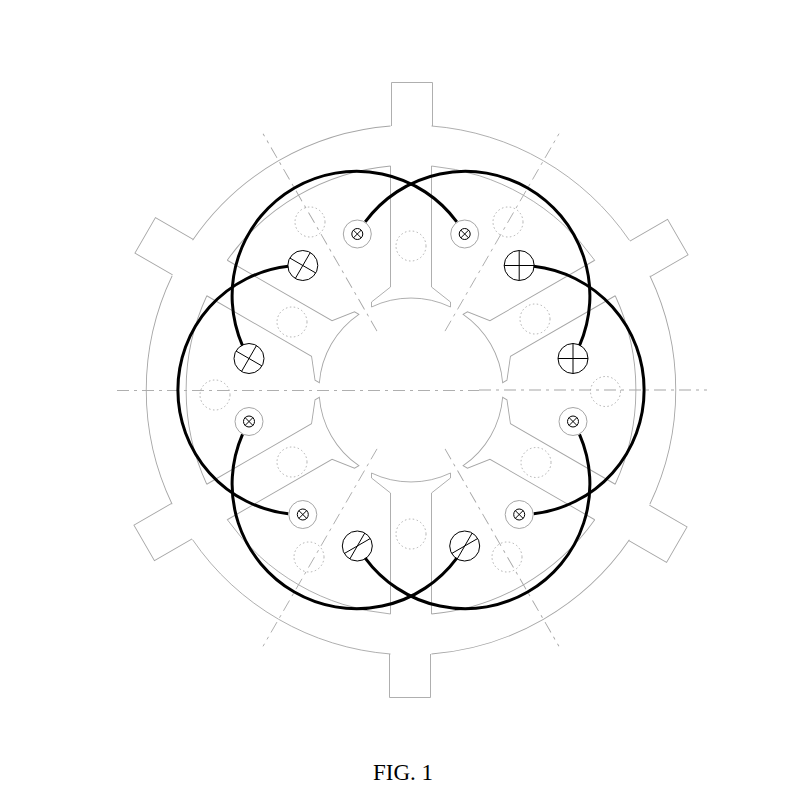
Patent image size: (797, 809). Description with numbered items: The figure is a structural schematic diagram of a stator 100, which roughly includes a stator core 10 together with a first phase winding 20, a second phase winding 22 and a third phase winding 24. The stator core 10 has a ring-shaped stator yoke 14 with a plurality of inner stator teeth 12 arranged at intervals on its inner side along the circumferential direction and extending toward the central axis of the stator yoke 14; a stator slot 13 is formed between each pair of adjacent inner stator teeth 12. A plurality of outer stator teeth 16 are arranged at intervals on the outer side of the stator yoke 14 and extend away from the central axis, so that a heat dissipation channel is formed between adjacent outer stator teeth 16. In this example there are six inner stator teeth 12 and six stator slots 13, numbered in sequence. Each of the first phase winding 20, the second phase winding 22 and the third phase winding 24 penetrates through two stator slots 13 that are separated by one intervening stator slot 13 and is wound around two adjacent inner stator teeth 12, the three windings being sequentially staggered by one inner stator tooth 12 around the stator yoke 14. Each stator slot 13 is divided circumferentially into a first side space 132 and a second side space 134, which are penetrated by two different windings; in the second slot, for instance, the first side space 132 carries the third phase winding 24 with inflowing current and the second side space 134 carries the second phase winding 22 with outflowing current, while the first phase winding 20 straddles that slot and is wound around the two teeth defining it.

The stator 100 is at (432, 42).
The stator core 10 is at (470, 112).
The inner stator teeth 12 is at (397, 197).
The stator yoke 14 is at (498, 158).
The outer stator teeth 16 is at (667, 247).
The stator slot 13 is at (70, 338).
The first side space 132 is at (218, 365).
The second side space 134 is at (218, 428).
The first phase winding 20 is at (268, 200).
The second phase winding 22 is at (188, 332).
The third phase winding 24 is at (547, 187).